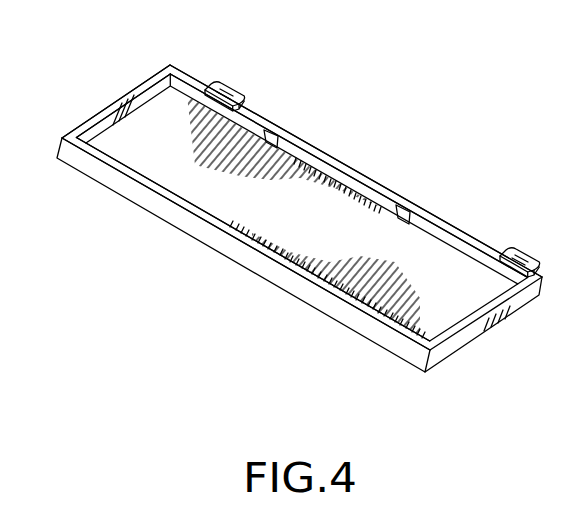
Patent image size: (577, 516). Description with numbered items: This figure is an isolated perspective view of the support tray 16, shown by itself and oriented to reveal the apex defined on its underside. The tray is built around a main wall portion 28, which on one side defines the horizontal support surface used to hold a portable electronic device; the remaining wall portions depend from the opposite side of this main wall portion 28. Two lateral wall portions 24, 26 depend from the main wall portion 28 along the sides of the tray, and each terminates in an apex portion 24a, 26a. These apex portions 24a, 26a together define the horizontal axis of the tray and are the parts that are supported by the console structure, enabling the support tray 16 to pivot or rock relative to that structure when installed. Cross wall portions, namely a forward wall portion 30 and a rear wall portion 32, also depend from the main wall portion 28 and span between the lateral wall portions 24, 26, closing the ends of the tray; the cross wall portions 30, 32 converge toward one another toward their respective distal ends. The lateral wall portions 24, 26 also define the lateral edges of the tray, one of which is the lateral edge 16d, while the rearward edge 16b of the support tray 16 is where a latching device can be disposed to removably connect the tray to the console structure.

The support tray 16 is at (106, 268).
The rearward edge 16b is at (307, 307).
The lateral edge 16d is at (452, 357).
The lateral wall portion 24 is at (477, 328).
The apex portion 24a is at (475, 313).
The lateral wall portion 26 is at (98, 127).
The apex portion 26a is at (112, 99).
The main wall portion 28 is at (283, 210).
The forward wall portion 30 is at (350, 162).
The rear wall portion 32 is at (228, 246).